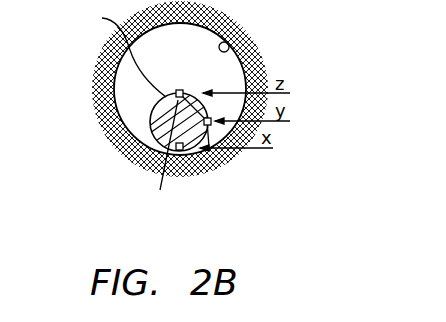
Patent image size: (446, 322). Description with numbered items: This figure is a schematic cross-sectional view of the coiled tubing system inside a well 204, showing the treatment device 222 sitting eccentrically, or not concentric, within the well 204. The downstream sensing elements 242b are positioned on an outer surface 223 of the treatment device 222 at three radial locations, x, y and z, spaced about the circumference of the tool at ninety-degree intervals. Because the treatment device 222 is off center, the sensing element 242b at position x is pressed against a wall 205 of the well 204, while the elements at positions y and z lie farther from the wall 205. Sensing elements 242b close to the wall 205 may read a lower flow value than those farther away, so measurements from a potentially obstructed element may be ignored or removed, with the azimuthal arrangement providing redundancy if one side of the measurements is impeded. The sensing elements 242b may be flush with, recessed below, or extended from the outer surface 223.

The wall 205 is at (100, 80).
The well 204 is at (231, 45).
The outer surface 223 is at (117, 52).
The treatment device 222 is at (176, 96).
The downstream sensor elements 242b is at (177, 150).